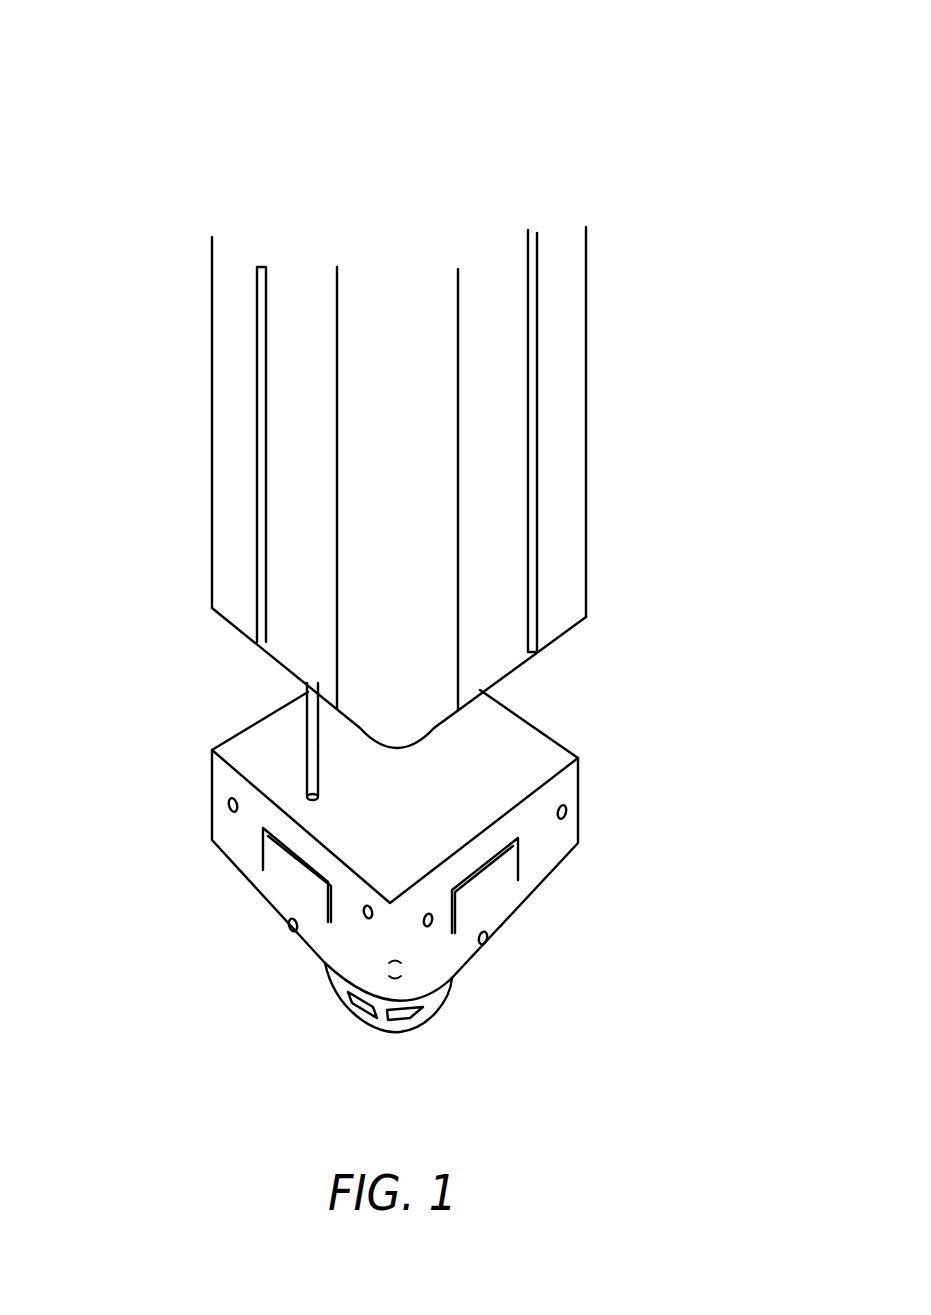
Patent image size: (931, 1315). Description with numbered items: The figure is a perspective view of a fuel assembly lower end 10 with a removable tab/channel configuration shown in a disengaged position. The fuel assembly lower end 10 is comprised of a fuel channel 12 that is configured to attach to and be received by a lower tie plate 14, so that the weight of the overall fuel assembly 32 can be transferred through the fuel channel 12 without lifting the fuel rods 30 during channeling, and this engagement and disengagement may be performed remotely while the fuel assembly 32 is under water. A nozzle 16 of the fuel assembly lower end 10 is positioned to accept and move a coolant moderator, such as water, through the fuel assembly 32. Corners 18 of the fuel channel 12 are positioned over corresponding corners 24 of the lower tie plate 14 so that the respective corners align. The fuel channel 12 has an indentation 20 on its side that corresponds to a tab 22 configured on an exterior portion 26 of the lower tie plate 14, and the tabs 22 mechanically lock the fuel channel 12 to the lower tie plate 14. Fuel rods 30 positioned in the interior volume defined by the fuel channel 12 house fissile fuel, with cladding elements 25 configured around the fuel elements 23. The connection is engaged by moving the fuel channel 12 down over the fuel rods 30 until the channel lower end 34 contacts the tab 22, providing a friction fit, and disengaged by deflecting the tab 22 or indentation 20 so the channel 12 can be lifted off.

The fuel assembly lower end 10 is at (667, 244).
The fuel channel 12 is at (207, 357).
The lower tie plate 14 is at (570, 804).
The nozzle 16 is at (418, 1025).
The corners of the fuel channel 18 is at (586, 600).
The indentation 20 is at (280, 648).
The tab 22 is at (262, 858).
The fuel elements 23 is at (322, 745).
The corners of the lower tie plate 24 is at (578, 758).
The cladding elements 25 is at (243, 783).
The exterior portion of the lower tie plate 26 is at (552, 855).
The fuel rods 30 is at (322, 772).
The fuel assembly 32 is at (178, 161).
The lower end of the channel 34 is at (227, 622).